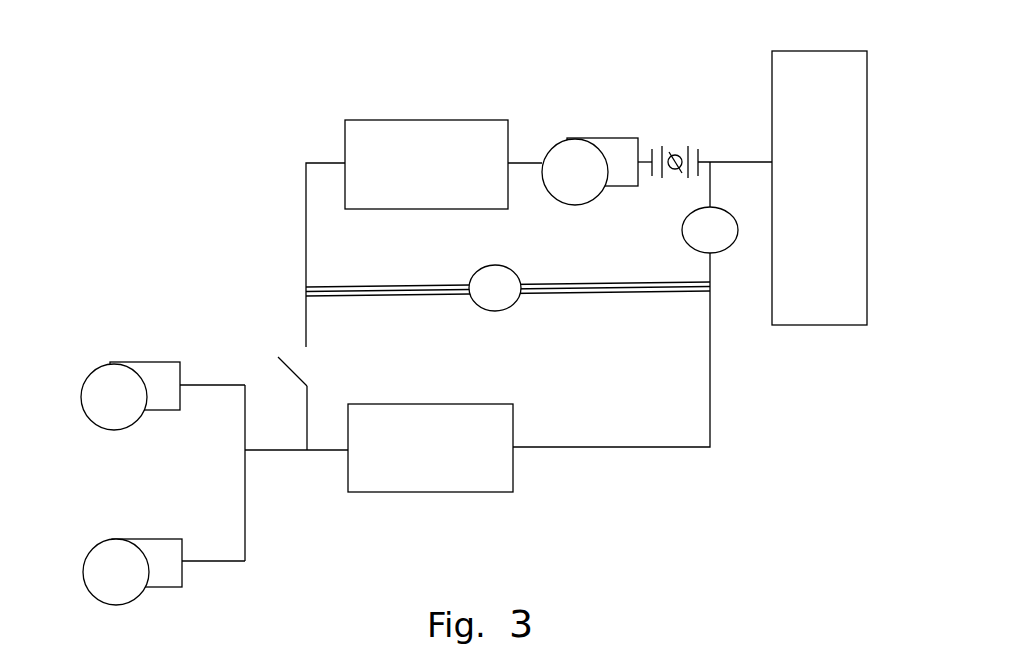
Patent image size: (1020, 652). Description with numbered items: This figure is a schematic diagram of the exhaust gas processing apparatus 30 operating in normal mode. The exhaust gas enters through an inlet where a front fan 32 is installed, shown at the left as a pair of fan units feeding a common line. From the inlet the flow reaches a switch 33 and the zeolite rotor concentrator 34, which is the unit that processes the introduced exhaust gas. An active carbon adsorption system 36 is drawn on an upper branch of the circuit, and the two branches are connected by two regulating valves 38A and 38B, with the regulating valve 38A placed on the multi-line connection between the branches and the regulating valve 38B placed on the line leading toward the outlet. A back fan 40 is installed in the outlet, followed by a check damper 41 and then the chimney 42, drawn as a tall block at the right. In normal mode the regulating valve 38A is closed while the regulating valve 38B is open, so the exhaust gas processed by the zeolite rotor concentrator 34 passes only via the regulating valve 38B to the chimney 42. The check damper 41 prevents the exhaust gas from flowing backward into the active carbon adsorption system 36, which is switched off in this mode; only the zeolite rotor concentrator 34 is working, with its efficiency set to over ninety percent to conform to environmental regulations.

The exhaust gas processing apparatus 30 is at (322, 52).
The front fan 32 is at (86, 330).
The switch 33 is at (290, 356).
The zeolite rotor concentrator 34 is at (428, 492).
The active carbon adsorption system 36 is at (423, 120).
The regulating valve 38A is at (508, 311).
The regulating valve 38B is at (729, 250).
The back fan 40 is at (605, 138).
The check damper 41 is at (675, 150).
The chimney 42 is at (867, 190).